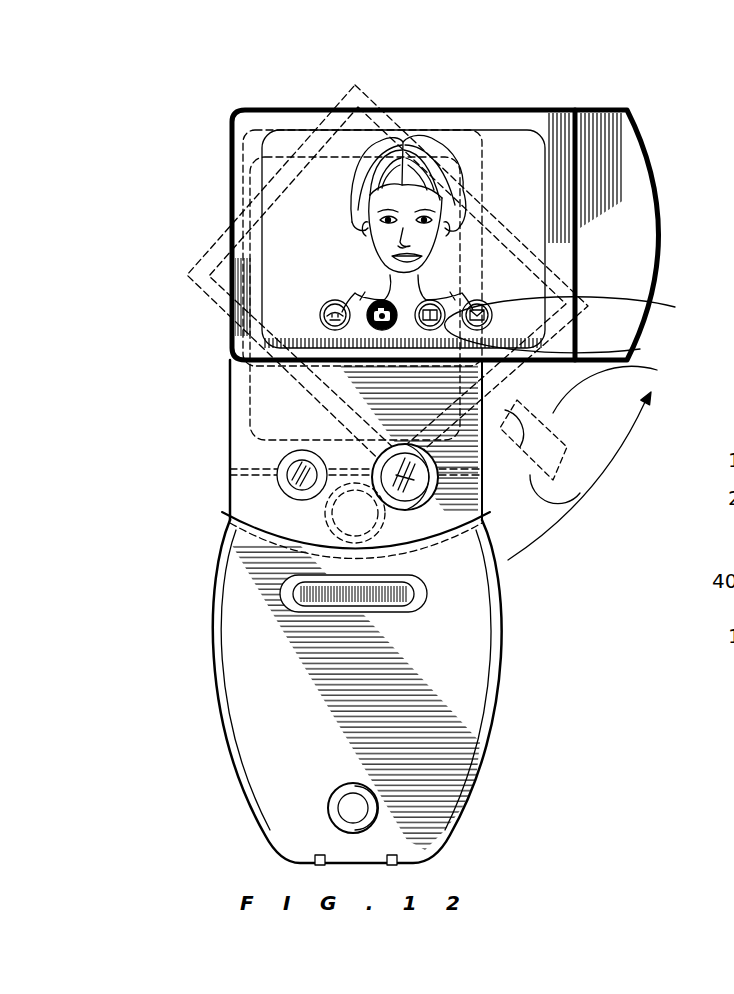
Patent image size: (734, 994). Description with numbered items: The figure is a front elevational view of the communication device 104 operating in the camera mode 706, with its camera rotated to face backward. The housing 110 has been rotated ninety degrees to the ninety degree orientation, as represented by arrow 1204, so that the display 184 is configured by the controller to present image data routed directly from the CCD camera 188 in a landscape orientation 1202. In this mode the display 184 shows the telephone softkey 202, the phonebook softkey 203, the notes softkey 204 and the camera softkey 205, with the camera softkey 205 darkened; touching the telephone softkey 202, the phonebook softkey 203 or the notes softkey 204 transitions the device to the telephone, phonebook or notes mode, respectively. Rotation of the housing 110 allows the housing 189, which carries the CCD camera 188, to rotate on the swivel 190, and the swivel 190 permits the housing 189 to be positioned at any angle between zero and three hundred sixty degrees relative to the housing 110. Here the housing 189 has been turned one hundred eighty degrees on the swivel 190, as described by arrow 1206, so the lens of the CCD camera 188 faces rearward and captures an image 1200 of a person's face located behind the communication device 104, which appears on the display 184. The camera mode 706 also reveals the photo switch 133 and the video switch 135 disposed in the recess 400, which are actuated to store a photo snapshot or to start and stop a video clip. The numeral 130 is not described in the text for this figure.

The landscape orientation 1202 is at (222, 140).
The camera mode 706 is at (122, 171).
The image 1200 is at (350, 160).
The housing 110 is at (532, 110).
The display 184 is at (513, 156).
The housing 130 is at (718, 103).
The housing 189 is at (272, 518).
The communication device 104 is at (217, 383).
The recess 400 is at (237, 423).
The telephone softkey 202 is at (330, 302).
The camera softkey 205 is at (378, 324).
The phonebook softkey 203 is at (640, 349).
The notes softkey 204 is at (675, 307).
The photo switch 133 is at (293, 460).
The video switch 135 is at (430, 505).
The CCD camera 188 is at (340, 507).
The swivel 190 is at (536, 457).
The arrow 1206 is at (584, 432).
The arrow 1204 is at (600, 478).